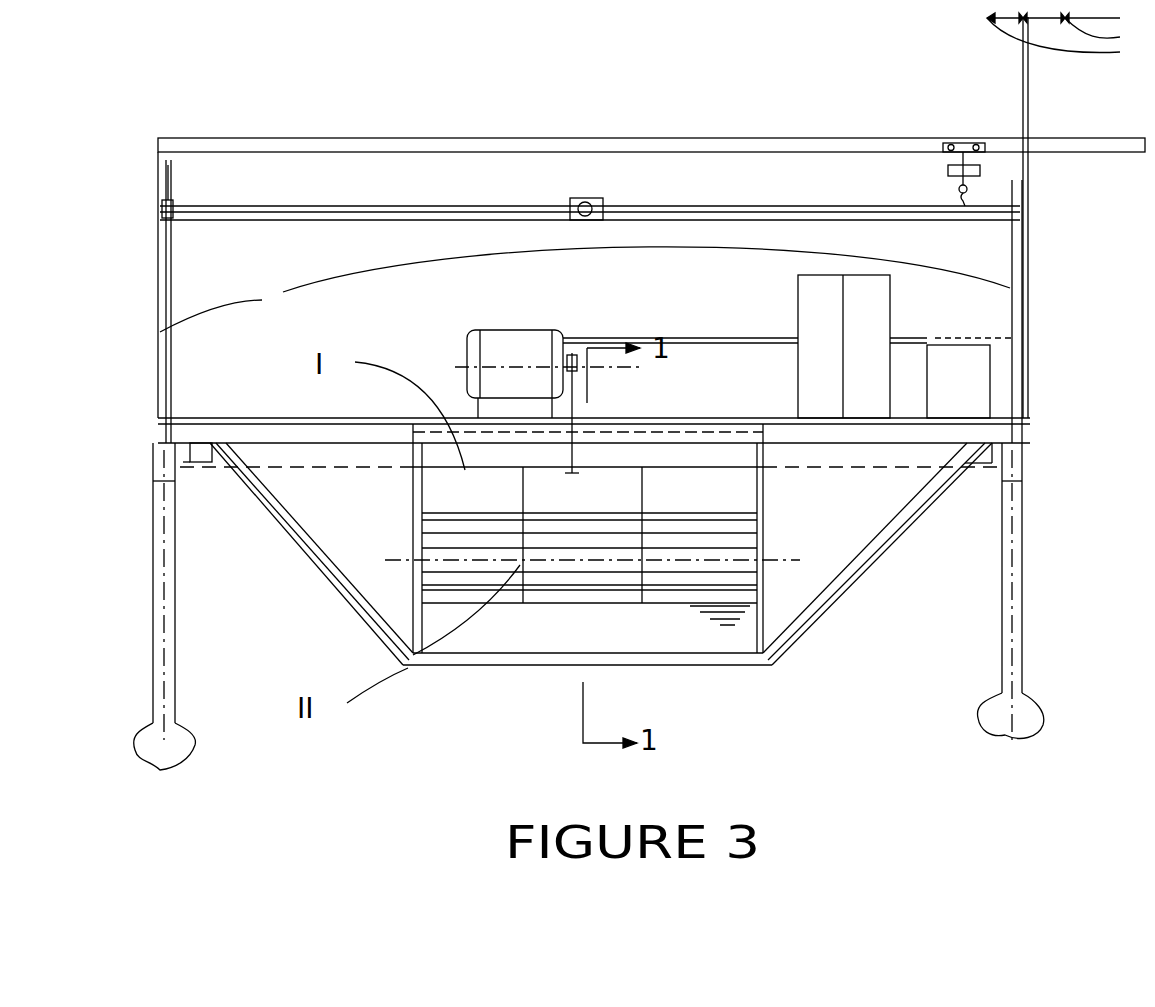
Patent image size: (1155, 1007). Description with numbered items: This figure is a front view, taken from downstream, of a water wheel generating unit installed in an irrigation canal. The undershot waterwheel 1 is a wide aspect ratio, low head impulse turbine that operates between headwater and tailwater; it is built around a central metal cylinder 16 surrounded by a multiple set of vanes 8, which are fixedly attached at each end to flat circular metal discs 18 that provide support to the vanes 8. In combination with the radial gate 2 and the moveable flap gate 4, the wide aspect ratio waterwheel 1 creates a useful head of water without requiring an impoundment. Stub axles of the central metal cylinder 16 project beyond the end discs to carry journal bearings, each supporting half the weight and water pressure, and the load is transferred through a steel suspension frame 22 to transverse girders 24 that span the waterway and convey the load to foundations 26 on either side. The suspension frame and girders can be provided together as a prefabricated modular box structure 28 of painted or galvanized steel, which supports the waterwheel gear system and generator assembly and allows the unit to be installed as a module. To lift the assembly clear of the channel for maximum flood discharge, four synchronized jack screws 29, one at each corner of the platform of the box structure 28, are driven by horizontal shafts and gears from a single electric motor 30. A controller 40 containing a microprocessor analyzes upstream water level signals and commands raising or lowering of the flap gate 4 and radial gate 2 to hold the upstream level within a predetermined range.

The waterwheel 1 is at (680, 610).
The radial gate 2 is at (483, 560).
The moveable flap gate 4 is at (597, 492).
The vanes 8 is at (600, 527).
The central metal cylinder 16 is at (575, 592).
The flat circular metal discs 18 is at (422, 558).
The steel suspension frame 22 is at (753, 490).
The transverse girders 24 is at (327, 437).
The foundations 26 is at (175, 650).
The modular box structure 28 is at (303, 152).
The jack screws 29 is at (170, 268).
The electric motor 30 is at (735, 210).
The controller 40 is at (798, 302).